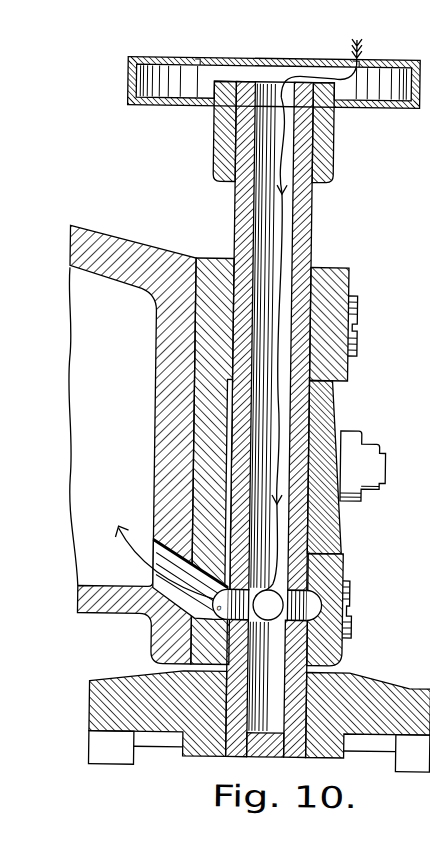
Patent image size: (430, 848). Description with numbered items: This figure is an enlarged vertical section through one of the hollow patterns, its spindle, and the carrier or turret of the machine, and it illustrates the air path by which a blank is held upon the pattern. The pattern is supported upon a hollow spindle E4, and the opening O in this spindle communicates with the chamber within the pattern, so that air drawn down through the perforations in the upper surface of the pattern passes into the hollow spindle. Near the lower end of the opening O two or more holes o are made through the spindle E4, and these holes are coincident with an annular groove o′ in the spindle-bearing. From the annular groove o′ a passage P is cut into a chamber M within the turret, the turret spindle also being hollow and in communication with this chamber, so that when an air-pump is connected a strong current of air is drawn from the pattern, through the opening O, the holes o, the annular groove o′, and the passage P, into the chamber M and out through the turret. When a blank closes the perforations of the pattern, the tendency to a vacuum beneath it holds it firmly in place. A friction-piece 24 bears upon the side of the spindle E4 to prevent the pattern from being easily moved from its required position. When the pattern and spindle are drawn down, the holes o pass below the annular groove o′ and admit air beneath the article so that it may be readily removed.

The chamber M is at (130, 426).
The inlet port of flange e is at (155, 57).
The inlet port of flange e′ is at (350, 63).
The spindle E4 is at (300, 230).
The opening O is at (269, 407).
The friction-piece 24 is at (337, 411).
The holes o is at (268, 605).
The annular groove o′ is at (311, 604).
The passage P is at (142, 616).